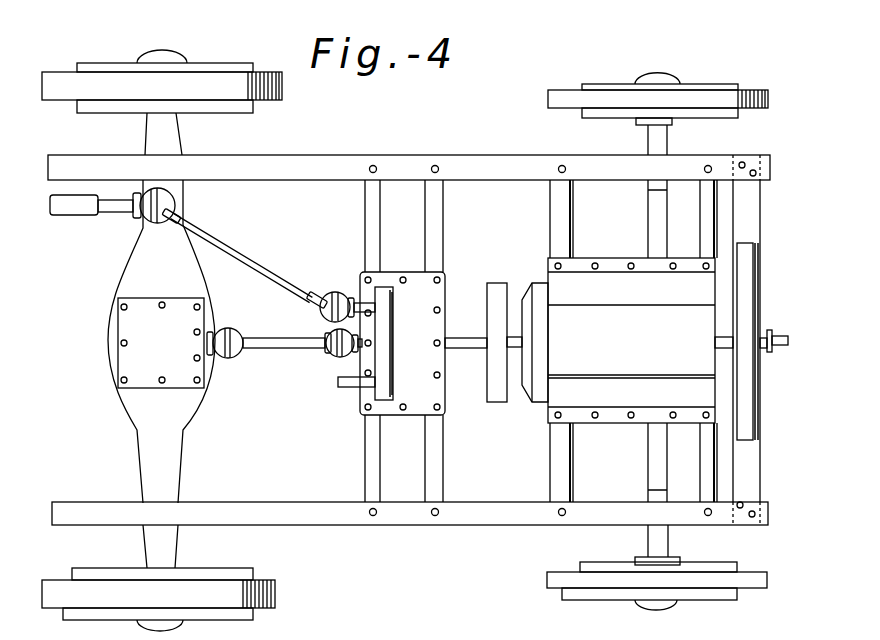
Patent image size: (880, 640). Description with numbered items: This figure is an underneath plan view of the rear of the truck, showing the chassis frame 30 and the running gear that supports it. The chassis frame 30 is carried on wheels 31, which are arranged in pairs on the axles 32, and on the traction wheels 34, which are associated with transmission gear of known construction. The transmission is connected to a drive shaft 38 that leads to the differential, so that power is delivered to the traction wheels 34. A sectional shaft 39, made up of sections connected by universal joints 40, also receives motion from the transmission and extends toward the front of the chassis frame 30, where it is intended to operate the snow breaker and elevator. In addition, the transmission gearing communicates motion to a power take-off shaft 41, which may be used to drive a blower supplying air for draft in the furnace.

The chassis frame 30 is at (477, 518).
The wheels 31 is at (707, 100).
The axles 32 is at (662, 80).
The traction wheels 34 is at (283, 92).
The drive shaft 38 is at (279, 346).
The sectional shaft 39 is at (281, 273).
The universal joints 40 is at (167, 205).
The power take-off shaft 41 is at (352, 390).